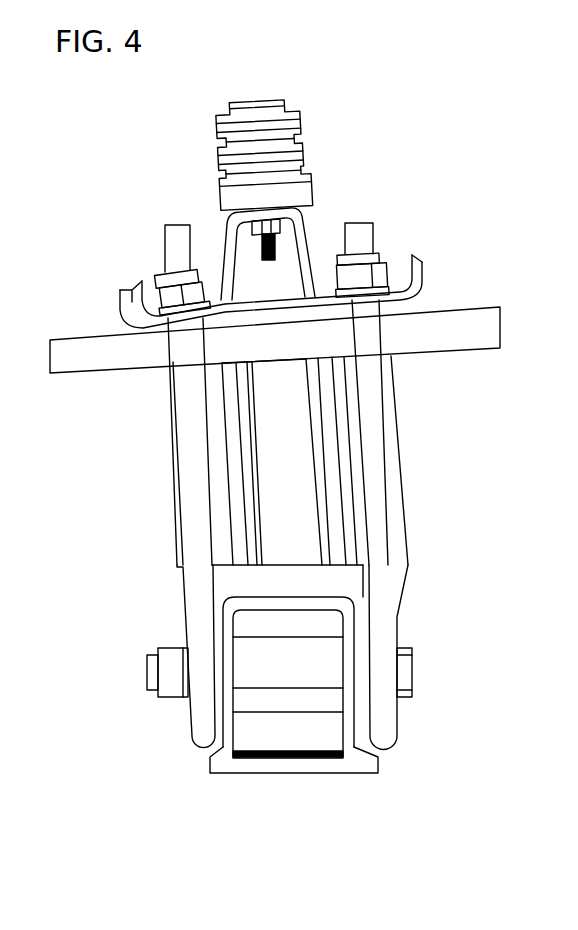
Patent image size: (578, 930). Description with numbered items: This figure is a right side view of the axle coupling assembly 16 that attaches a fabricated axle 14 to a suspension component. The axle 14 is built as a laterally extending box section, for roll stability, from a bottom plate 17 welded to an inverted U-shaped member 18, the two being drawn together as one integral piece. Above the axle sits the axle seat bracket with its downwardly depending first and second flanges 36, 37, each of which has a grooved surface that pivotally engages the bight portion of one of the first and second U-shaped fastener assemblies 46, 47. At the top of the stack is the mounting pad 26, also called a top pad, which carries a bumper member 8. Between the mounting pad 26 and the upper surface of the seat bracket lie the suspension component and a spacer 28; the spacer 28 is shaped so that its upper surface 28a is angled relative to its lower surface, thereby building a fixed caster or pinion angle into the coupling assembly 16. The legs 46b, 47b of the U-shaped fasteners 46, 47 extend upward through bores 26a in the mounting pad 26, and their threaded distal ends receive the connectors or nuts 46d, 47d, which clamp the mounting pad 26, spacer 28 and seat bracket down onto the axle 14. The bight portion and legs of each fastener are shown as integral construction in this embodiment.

The bumper member 8 is at (263, 98).
The mounting pad 26 is at (314, 216).
The bores 26a is at (180, 311).
The connector or nut 47d is at (182, 295).
The connector or nut 46d is at (383, 278).
The first leg 47b is at (190, 483).
The first leg 46b is at (375, 515).
The upper surface 28a is at (243, 366).
The spacer 28 is at (297, 433).
The axle coupling assembly 16 is at (150, 557).
The second U-shaped fastener assembly 47 is at (172, 738).
The first U-shaped fastener assembly 46 is at (408, 752).
The second flange 37 is at (182, 582).
The first flange 36 is at (410, 612).
The inverted U-shaped member 18 is at (317, 611).
The bottom plate 17 is at (270, 774).
The fabricated axle 14 is at (328, 786).